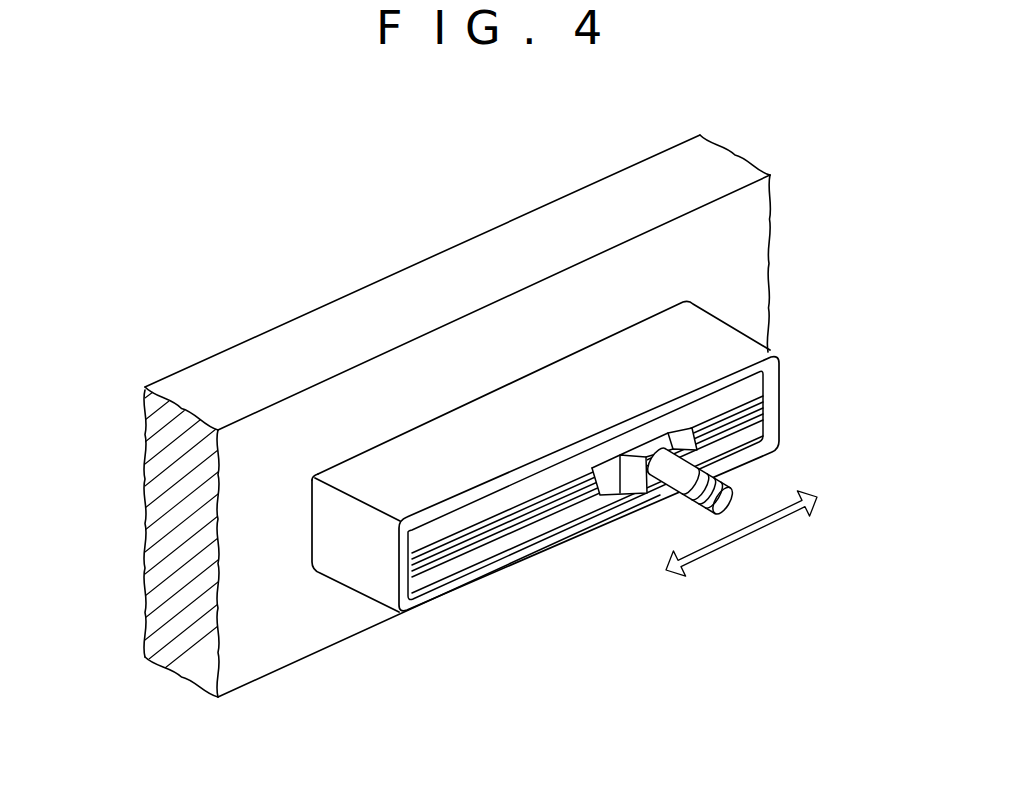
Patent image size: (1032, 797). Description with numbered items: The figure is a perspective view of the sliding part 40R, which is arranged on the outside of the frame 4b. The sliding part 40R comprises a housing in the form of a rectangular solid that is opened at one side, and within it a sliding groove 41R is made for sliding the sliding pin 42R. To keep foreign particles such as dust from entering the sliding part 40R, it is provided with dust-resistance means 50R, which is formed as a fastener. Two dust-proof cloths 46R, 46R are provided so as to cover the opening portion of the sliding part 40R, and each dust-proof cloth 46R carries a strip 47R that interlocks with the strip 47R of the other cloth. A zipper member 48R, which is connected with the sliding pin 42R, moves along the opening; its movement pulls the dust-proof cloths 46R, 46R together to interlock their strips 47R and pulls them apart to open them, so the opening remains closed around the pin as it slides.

The frame 4b is at (357, 291).
The sliding part 40R is at (728, 322).
The sliding groove 41R is at (424, 587).
The sliding pin 42R is at (727, 500).
The dust-proof cloth 46R is at (737, 393).
The strip 47R is at (495, 522).
The zipper member 48R is at (647, 449).
The dust-resistance means 50R is at (590, 543).